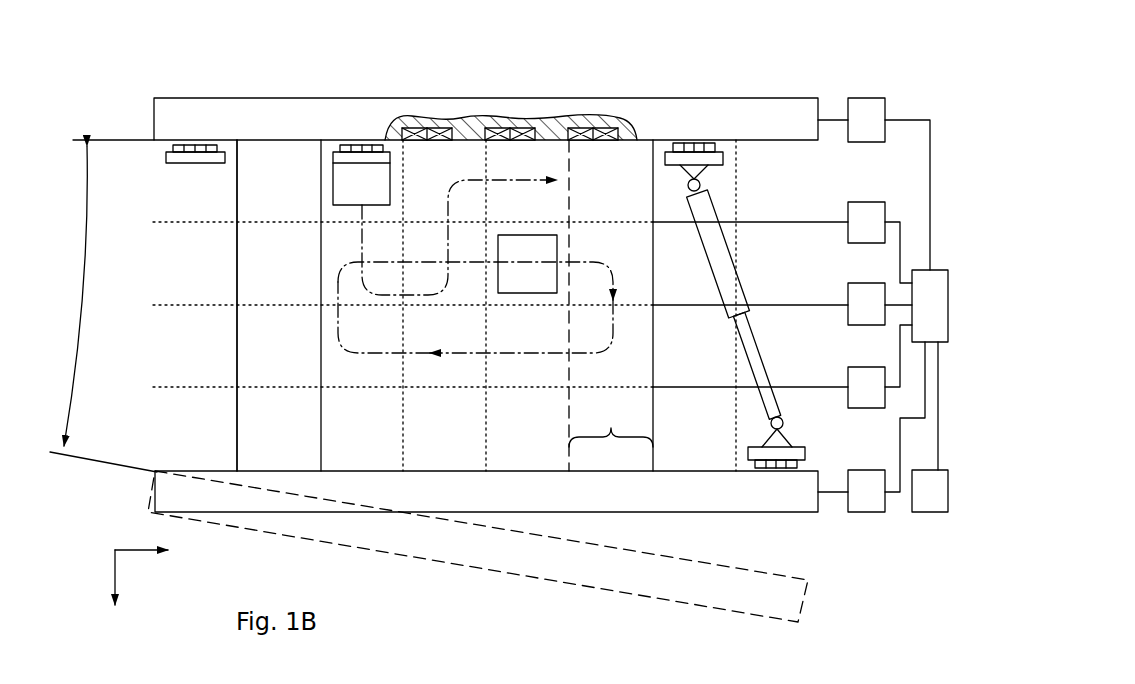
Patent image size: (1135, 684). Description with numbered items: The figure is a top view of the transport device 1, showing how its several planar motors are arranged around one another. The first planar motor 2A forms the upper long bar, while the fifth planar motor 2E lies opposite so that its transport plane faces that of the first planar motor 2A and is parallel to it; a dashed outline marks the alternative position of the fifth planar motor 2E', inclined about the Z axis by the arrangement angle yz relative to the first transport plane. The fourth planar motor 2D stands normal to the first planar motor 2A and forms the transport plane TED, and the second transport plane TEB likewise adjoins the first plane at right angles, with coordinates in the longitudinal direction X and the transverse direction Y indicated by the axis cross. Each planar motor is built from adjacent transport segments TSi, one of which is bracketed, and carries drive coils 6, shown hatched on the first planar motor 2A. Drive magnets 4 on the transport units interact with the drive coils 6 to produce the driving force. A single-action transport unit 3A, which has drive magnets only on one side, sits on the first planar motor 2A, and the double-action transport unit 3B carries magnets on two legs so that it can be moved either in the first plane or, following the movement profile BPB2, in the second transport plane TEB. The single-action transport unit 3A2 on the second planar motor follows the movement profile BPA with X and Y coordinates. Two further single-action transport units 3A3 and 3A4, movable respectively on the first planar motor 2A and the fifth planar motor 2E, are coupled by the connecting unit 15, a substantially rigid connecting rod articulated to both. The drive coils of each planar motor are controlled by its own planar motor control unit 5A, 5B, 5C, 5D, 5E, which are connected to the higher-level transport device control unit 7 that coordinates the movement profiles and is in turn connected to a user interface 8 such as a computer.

The transport device 1 is at (142, 83).
The first planar motor 2A is at (210, 118).
The fourth planar motor 2D is at (278, 433).
The fifth planar motor 2E is at (486, 516).
The inclined fifth planar motor 2E' is at (478, 560).
The single-action transport unit 3A is at (185, 168).
The double-action transport unit 3B is at (363, 190).
The single-action transport unit 3A2 is at (528, 277).
The single-action transport unit 3A3 is at (703, 160).
The single-action transport unit 3A4 is at (783, 450).
The drive magnets 4 is at (173, 148).
The drive coils 6 is at (525, 140).
The connecting unit 15 is at (712, 242).
The planar motor control unit 5A is at (881, 134).
The planar motor control unit 5B is at (881, 237).
The planar motor control unit 5C is at (881, 319).
The planar motor control unit 5D is at (881, 402).
The planar motor control unit 5E is at (881, 506).
The transport device control unit 7 is at (939, 319).
The user interface 8 is at (939, 506).
The movement profile BPA is at (362, 355).
The movement profile BPB2 is at (458, 182).
The second transport plane TEB is at (632, 203).
The transport plane of the fourth planar motor TED is at (302, 366).
The transport segment TSi is at (611, 421).
The arrangement angle about the Z axis yz is at (88, 296).
The longitudinal axis X is at (141, 568).
The transverse axis Y is at (126, 584).